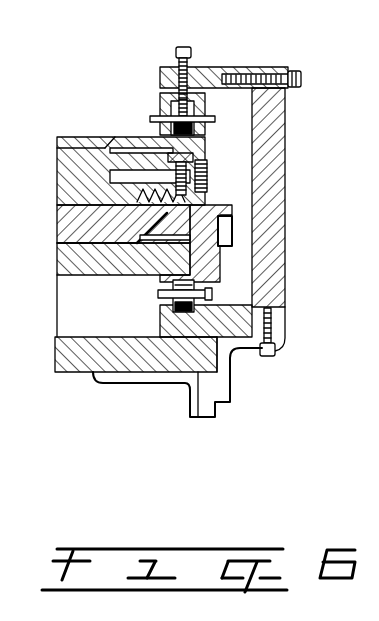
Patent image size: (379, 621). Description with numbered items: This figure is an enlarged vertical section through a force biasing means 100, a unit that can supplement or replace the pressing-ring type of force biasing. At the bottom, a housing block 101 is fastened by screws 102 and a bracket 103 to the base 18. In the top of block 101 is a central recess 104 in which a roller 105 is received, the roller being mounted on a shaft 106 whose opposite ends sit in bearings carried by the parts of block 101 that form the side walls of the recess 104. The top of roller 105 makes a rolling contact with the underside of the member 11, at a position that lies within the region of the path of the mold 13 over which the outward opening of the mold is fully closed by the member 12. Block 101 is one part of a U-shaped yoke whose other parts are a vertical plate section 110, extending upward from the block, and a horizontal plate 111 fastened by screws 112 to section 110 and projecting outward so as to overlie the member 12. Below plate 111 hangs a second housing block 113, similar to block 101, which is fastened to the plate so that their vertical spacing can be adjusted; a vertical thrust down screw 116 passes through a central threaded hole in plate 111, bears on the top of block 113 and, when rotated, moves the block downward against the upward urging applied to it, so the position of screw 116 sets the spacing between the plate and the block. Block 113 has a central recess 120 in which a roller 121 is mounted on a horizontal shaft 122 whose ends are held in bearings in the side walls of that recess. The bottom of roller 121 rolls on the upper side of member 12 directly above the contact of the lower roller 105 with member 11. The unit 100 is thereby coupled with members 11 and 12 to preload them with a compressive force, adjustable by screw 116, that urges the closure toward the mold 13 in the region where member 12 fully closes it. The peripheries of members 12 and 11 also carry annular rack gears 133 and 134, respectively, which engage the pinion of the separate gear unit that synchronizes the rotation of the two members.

The force biasing means 100 is at (300, 195).
The vertical plate section 110 is at (287, 132).
The horizontal plate 111 is at (214, 72).
The screws 112 is at (296, 73).
The thrust down screw 116 is at (190, 52).
The housing block 113 is at (163, 103).
The central recess 120 is at (163, 108).
The roller 121 is at (166, 126).
The horizontal shaft 122 is at (208, 120).
The annular rack gear 133 is at (211, 165).
The mold 13 is at (206, 190).
The annular rack gear 134 is at (231, 233).
The member 12 is at (128, 140).
The member 11 is at (62, 228).
The base 18 is at (72, 362).
The housing block 101 is at (160, 320).
The central recess 104 is at (172, 300).
The roller 105 is at (172, 286).
The shaft 106 is at (209, 300).
The screws 102 is at (274, 352).
The bracket 103 is at (231, 388).